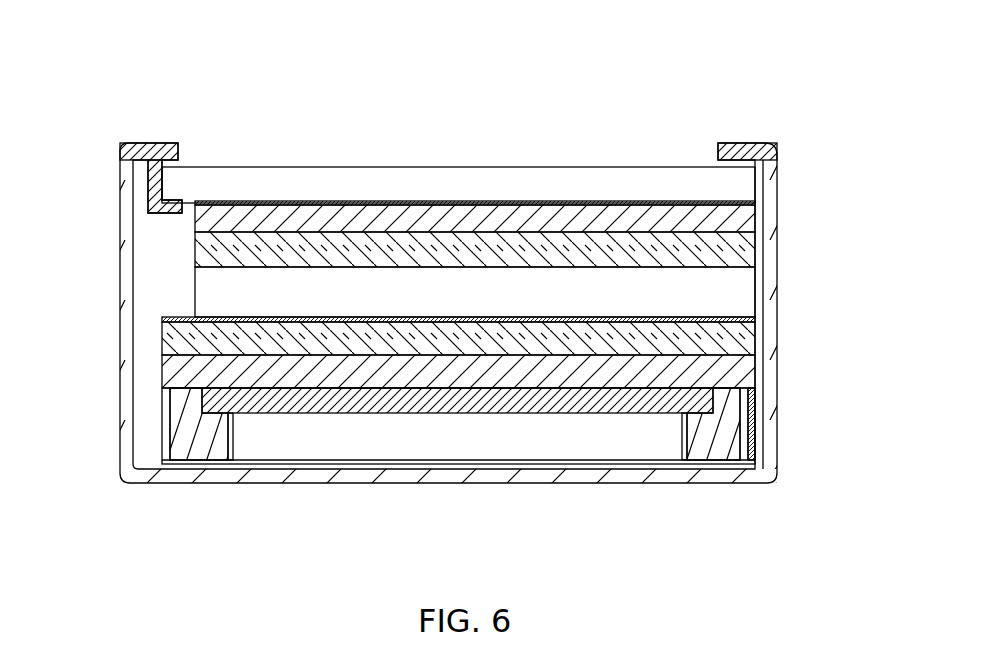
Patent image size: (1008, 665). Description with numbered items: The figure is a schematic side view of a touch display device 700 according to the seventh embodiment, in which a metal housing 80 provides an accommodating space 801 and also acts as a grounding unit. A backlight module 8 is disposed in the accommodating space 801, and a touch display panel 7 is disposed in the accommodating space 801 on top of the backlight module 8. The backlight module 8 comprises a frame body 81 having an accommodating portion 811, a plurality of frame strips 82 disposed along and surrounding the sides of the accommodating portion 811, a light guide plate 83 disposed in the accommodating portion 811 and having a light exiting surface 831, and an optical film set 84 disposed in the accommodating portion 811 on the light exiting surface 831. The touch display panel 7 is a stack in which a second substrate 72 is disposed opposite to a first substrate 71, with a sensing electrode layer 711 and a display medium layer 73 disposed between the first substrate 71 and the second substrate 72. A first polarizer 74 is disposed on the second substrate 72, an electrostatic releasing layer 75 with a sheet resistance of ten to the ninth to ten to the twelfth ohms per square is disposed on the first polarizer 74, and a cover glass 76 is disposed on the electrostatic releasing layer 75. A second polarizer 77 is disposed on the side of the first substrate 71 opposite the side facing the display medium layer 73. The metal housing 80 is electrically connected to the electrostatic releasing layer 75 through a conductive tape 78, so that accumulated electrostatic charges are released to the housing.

The touch display device 700 is at (134, 40).
The conductive tape 78 is at (148, 160).
The metal housing 80 is at (150, 150).
The accommodating space 801 is at (150, 280).
The cover glass 76 is at (745, 178).
The electrostatic releasing layer 75 is at (750, 204).
The first polarizer 74 is at (748, 228).
The second substrate 72 is at (748, 255).
The display medium layer 73 is at (748, 290).
The sensing electrode layer 711 is at (748, 320).
The first substrate 71 is at (748, 340).
The second polarizer 77 is at (498, 374).
The touch display panel 7 is at (523, 271).
The light exiting surface 831 is at (450, 413).
The optical film set 84 is at (523, 395).
The light guide plate 83 is at (483, 457).
The frame body 81 is at (668, 462).
The frame strips 82 is at (718, 455).
The accommodating portion 811 is at (753, 440).
The backlight module 8 is at (437, 335).